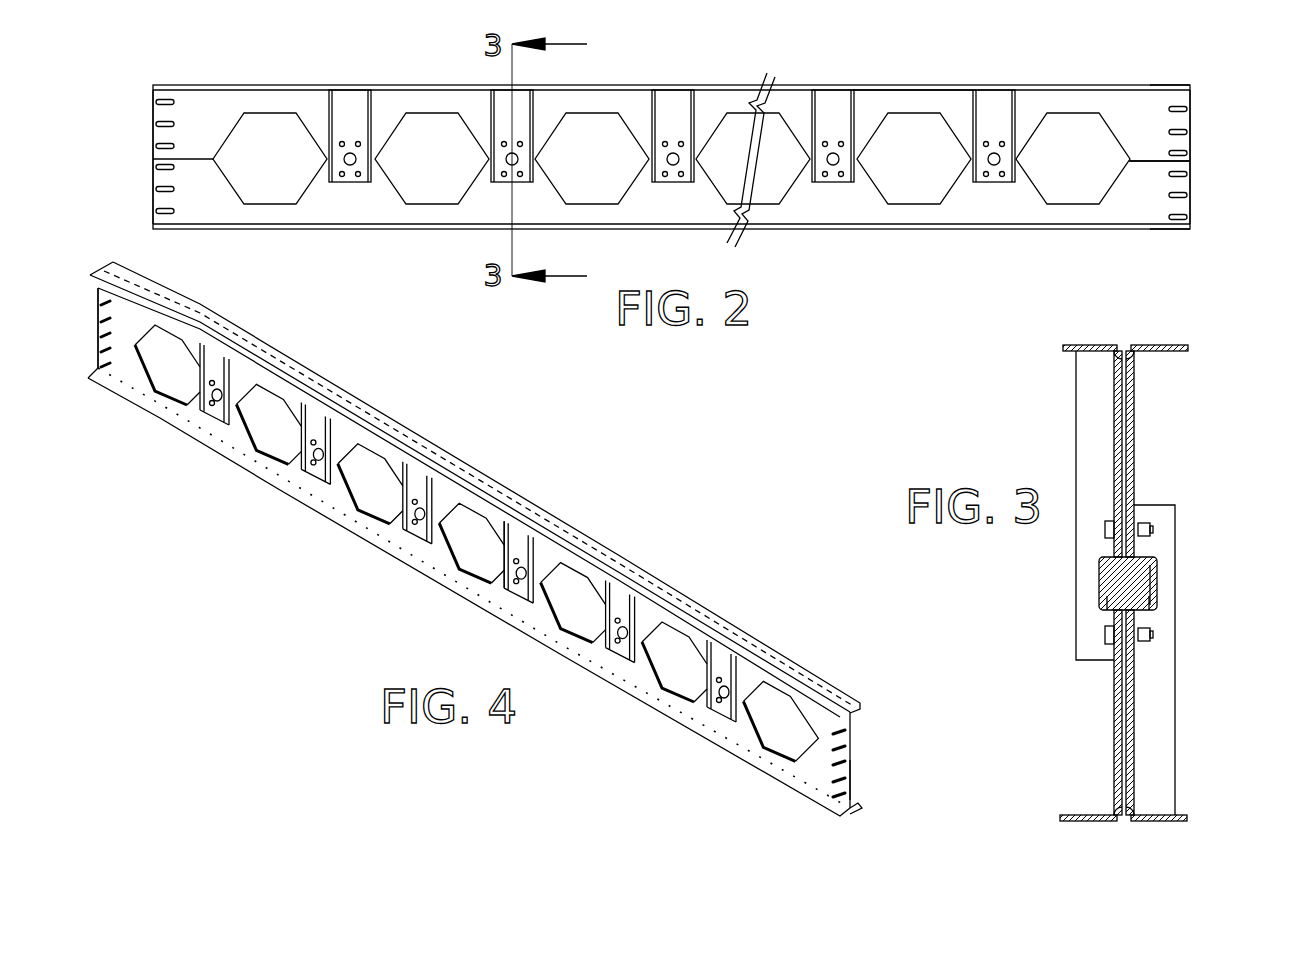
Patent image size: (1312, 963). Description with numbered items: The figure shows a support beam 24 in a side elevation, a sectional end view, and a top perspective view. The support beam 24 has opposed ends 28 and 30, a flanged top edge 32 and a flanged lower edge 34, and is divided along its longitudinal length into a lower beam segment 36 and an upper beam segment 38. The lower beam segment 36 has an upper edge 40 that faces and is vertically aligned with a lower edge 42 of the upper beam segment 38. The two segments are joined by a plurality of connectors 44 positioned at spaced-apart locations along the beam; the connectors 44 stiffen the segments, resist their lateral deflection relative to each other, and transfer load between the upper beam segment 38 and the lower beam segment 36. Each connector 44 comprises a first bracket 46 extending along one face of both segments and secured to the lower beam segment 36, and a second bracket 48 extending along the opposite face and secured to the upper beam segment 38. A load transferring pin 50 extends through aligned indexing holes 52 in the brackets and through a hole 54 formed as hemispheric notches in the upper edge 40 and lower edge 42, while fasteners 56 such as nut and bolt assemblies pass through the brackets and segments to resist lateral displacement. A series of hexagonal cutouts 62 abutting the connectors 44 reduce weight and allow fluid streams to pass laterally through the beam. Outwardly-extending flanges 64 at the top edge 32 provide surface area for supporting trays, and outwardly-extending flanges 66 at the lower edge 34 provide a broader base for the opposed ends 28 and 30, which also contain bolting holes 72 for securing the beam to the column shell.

In FIG. 2, the support beam 24 is at (1050, 91).
In FIG. 4, the support beam 24 is at (395, 430).
In FIG. 3, the support beam 24 is at (1164, 347).
In FIG. 2, the opposed end 28 is at (165, 188).
In FIG. 4, the opposed end 28 is at (101, 307).
In FIG. 2, the opposed end 30 is at (1182, 208).
In FIG. 4, the opposed end 30 is at (850, 732).
In FIG. 2, the flanged top edge 32 is at (1190, 95).
In FIG. 4, the flanged top edge 32 is at (862, 710).
In FIG. 3, the flanged top edge 32 is at (1135, 352).
In FIG. 2, the flanged lower edge 34 is at (1190, 228).
In FIG. 4, the flanged lower edge 34 is at (836, 800).
In FIG. 3, the flanged lower edge 34 is at (1118, 812).
In FIG. 2, the lower beam segment 36 is at (872, 218).
In FIG. 4, the lower beam segment 36 is at (418, 550).
In FIG. 3, the lower beam segment 36 is at (1118, 740).
In FIG. 2, the upper beam segment 38 is at (886, 106).
In FIG. 4, the upper beam segment 38 is at (552, 558).
In FIG. 3, the upper beam segment 38 is at (1132, 428).
In FIG. 2, the upper edge 40 is at (1129, 160).
In FIG. 4, the upper edge 40 is at (818, 738).
In FIG. 2, the lower edge 42 is at (1190, 165).
In FIG. 4, the lower edge 42 is at (850, 775).
In FIG. 2, the connector 44 is at (1009, 112).
In FIG. 4, the connector 44 is at (496, 631).
In FIG. 3, the connector 44 is at (1130, 660).
In FIG. 4, the first bracket 46 is at (456, 552).
In FIG. 3, the first bracket 46 is at (1157, 708).
In FIG. 2, the second bracket 48 is at (1015, 137).
In FIG. 4, the second bracket 48 is at (433, 500).
In FIG. 3, the second bracket 48 is at (1085, 415).
In FIG. 2, the load transferring pin 50 is at (996, 160).
In FIG. 4, the load transferring pin 50 is at (515, 574).
In FIG. 3, the load transferring pin 50 is at (1152, 587).
In FIG. 3, the indexing hole 52 is at (1108, 600).
In FIG. 3, the hole 54 is at (1115, 595).
In FIG. 2, the fastener 56 is at (1002, 142).
In FIG. 4, the fastener 56 is at (498, 615).
In FIG. 3, the fastener 56 is at (1152, 530).
In FIG. 2, the cutout 62 is at (940, 197).
In FIG. 4, the cutout 62 is at (672, 665).
In FIG. 2, the outwardly-extending flange 64 is at (1150, 92).
In FIG. 4, the outwardly-extending flange 64 is at (830, 705).
In FIG. 3, the outwardly-extending flange 64 is at (1070, 349).
In FIG. 2, the outwardly-extending flange 66 is at (1150, 232).
In FIG. 4, the outwardly-extending flange 66 is at (858, 808).
In FIG. 3, the outwardly-extending flange 66 is at (1075, 816).
In FIG. 2, the bolting hole 72 is at (160, 103).
In FIG. 4, the bolting hole 72 is at (101, 365).